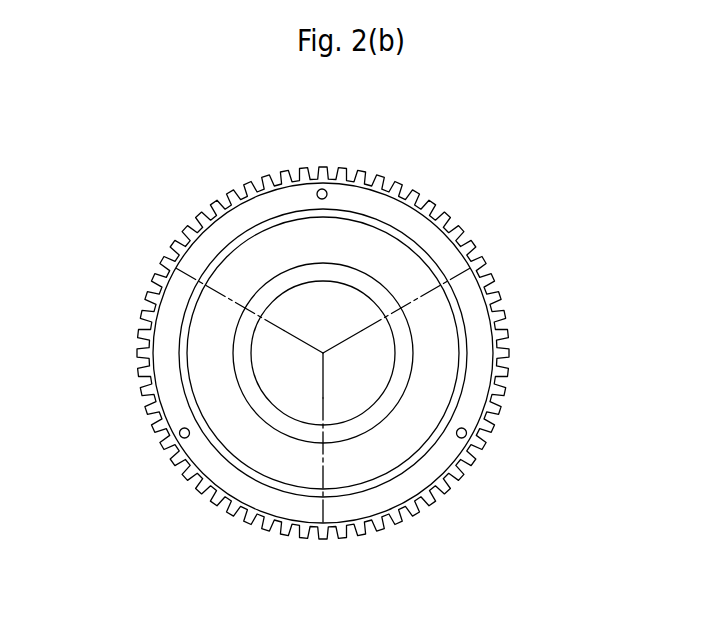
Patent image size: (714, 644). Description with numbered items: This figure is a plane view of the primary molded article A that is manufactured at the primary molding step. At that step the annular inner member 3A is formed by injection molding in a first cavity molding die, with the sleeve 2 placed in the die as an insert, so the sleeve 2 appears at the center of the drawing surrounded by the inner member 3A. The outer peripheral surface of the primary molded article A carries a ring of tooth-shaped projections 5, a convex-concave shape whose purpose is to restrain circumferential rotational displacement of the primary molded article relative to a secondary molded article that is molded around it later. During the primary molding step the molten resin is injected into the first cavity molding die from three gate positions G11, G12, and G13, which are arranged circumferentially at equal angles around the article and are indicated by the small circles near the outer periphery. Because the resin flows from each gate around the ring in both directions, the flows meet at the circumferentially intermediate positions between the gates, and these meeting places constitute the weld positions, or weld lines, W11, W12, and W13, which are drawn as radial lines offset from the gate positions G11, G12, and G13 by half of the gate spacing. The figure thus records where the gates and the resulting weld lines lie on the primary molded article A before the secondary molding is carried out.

The primary molded article A is at (534, 265).
The tooth-shaped projections 5 is at (513, 358).
The inner member 3A is at (372, 253).
The sleeve 2 is at (278, 282).
The gate position G11 is at (323, 189).
The gate position G12 is at (466, 437).
The gate position G13 is at (181, 436).
The weld position W11 is at (457, 270).
The weld position W12 is at (323, 478).
The weld position W13 is at (235, 303).